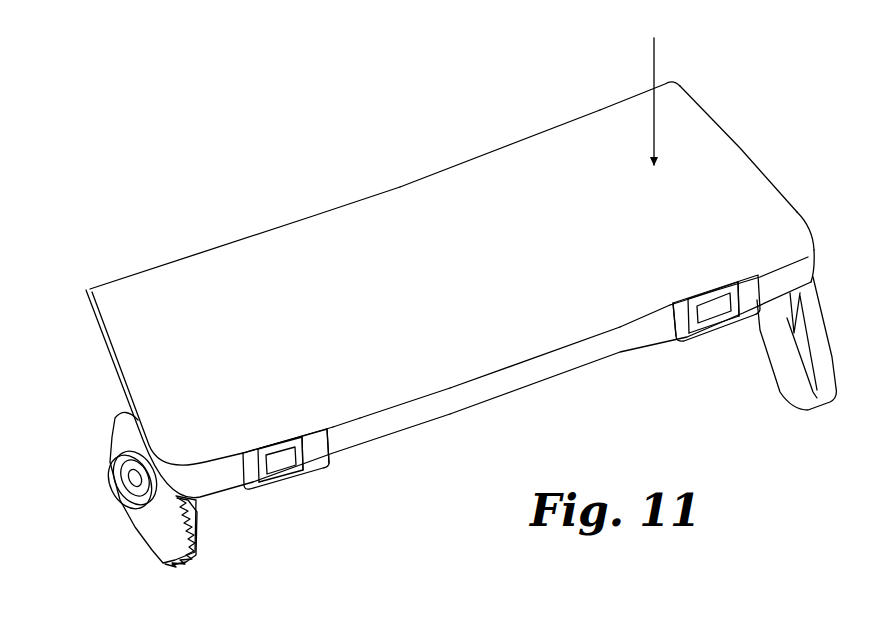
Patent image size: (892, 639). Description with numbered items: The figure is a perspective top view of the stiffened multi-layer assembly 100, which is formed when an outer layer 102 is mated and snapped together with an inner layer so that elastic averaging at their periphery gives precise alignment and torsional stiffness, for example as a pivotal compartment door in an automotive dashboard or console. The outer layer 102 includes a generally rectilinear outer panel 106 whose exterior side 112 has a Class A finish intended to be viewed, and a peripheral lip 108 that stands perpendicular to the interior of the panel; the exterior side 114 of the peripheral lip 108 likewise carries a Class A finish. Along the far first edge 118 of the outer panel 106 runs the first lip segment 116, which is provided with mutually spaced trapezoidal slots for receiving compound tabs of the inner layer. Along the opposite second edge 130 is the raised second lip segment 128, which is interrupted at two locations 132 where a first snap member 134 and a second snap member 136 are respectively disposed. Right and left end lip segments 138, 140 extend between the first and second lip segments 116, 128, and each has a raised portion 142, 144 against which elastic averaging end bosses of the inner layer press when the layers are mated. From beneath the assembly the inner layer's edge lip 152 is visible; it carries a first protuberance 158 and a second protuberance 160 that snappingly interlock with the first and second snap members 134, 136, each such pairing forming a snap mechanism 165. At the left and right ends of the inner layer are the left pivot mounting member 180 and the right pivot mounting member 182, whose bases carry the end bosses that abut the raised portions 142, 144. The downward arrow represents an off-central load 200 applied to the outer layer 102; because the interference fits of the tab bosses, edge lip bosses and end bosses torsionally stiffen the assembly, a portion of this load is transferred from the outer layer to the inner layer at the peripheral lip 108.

The stiffened multi-layer assembly 100 is at (725, 92).
The outer layer 102 is at (410, 173).
The outer panel 106 is at (185, 285).
The peripheral lip 108 is at (317, 216).
The exterior side 112 is at (545, 165).
The exterior side of the peripheral lip 114 is at (113, 367).
The first lip segment 116 is at (487, 154).
The first edge 118 is at (370, 197).
The raised second lip segment 128 is at (468, 397).
The second edge 130 is at (433, 408).
The locations 132 is at (253, 485).
The first snap member 134 is at (336, 466).
The second snap member 136 is at (677, 350).
The right end lip segment 138 is at (163, 458).
The left end lip segment 140 is at (803, 225).
The raised portion 142 is at (157, 457).
The raised portion 144 is at (814, 242).
The edge lip 152 is at (282, 472).
The first protuberance 158 is at (333, 478).
The second protuberance 160 is at (722, 320).
The snap mechanism 165 is at (288, 500).
The left pivot mounting member 180 is at (768, 407).
The right pivot mounting member 182 is at (133, 552).
The off-central load 200 is at (654, 62).